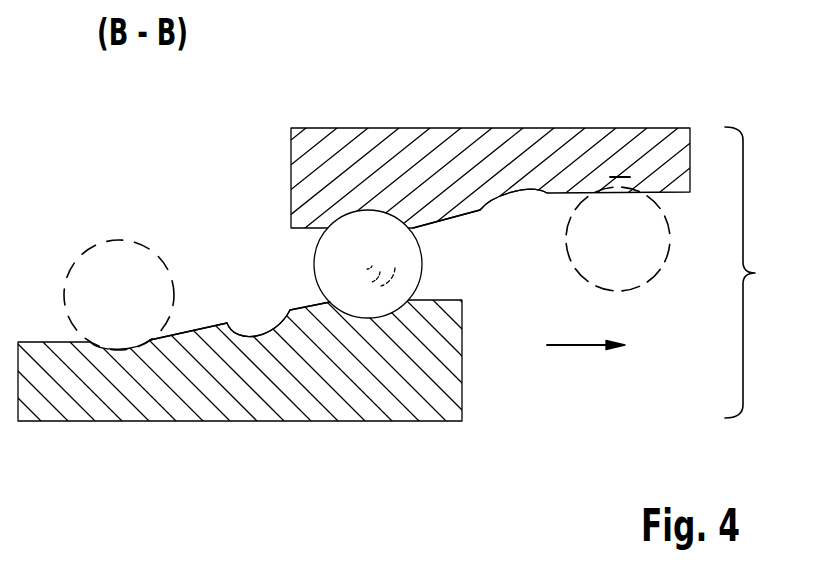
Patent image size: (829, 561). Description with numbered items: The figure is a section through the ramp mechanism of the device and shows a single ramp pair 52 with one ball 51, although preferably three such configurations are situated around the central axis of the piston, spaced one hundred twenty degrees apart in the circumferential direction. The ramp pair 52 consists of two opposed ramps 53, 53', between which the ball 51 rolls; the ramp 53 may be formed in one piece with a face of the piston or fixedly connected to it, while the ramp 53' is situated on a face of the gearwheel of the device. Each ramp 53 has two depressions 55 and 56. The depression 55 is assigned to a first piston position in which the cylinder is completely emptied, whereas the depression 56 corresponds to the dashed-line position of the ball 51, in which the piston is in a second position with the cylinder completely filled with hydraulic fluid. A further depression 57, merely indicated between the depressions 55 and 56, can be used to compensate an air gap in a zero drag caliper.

The ball 51 is at (345, 266).
The ramp pair 52 is at (755, 273).
The ramp 53 is at (490, 145).
The ramp 53' is at (276, 360).
The depression 55 is at (357, 214).
The depression 56 is at (618, 182).
The depression 57 is at (547, 194).